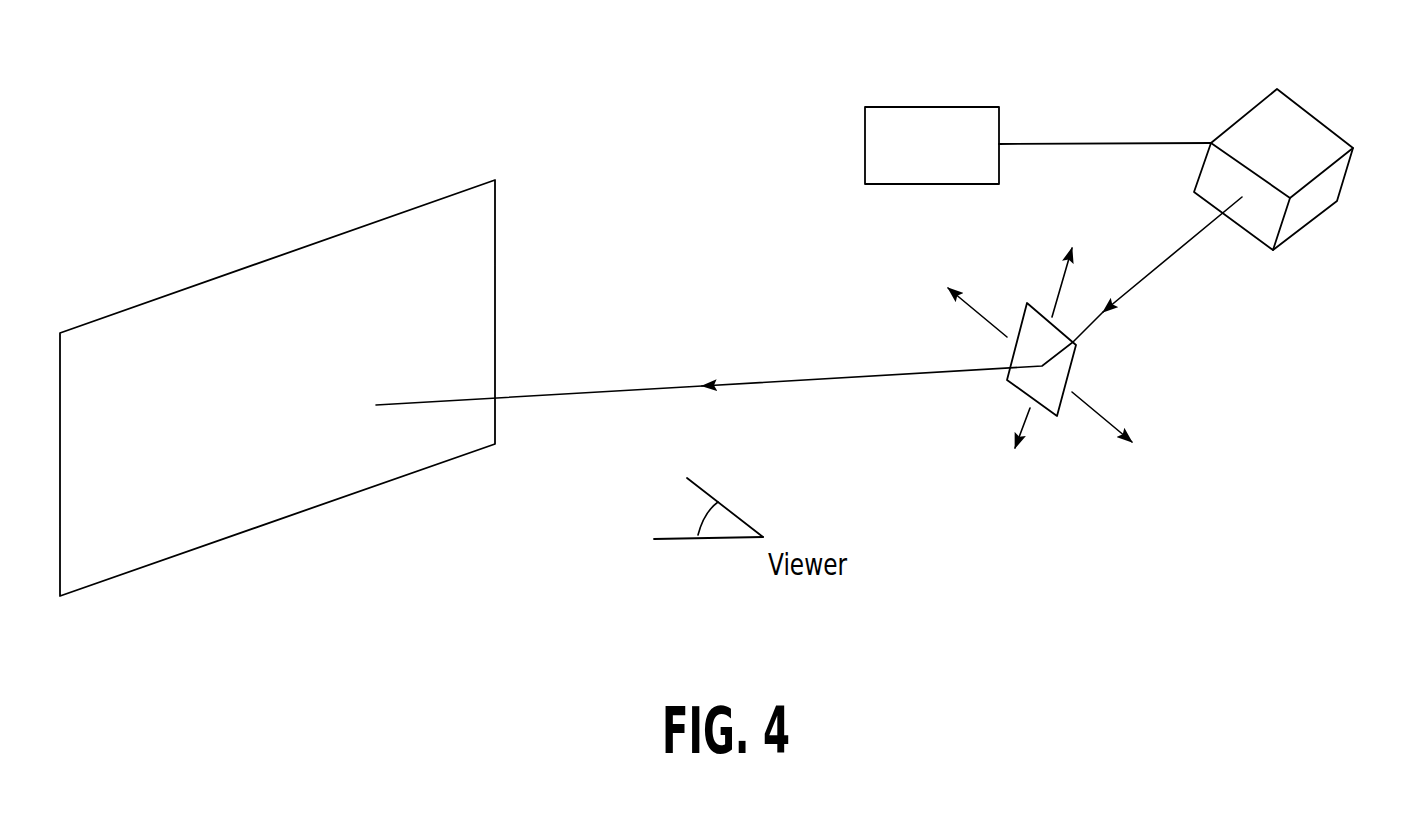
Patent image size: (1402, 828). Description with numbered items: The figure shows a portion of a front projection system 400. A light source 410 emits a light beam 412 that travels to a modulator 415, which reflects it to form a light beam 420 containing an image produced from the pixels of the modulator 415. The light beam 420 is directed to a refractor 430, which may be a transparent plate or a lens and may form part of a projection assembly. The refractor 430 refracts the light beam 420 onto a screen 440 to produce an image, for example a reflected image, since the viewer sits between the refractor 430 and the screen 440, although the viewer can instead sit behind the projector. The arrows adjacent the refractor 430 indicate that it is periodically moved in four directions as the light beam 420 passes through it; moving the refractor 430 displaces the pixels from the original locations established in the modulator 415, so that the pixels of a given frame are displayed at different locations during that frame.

The front projection system 400 is at (666, 101).
The light source 410 is at (956, 166).
The light beam 412 is at (1097, 140).
The modulator 415 is at (1302, 158).
The light beam 420 is at (1143, 283).
The refractor 430 is at (1058, 417).
The screen 440 is at (304, 512).